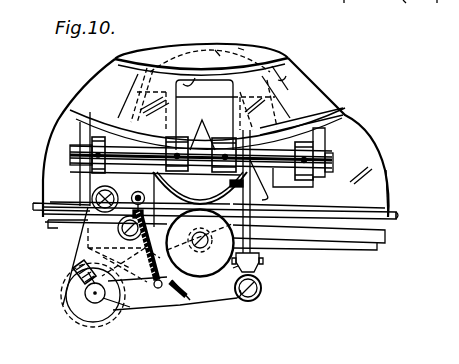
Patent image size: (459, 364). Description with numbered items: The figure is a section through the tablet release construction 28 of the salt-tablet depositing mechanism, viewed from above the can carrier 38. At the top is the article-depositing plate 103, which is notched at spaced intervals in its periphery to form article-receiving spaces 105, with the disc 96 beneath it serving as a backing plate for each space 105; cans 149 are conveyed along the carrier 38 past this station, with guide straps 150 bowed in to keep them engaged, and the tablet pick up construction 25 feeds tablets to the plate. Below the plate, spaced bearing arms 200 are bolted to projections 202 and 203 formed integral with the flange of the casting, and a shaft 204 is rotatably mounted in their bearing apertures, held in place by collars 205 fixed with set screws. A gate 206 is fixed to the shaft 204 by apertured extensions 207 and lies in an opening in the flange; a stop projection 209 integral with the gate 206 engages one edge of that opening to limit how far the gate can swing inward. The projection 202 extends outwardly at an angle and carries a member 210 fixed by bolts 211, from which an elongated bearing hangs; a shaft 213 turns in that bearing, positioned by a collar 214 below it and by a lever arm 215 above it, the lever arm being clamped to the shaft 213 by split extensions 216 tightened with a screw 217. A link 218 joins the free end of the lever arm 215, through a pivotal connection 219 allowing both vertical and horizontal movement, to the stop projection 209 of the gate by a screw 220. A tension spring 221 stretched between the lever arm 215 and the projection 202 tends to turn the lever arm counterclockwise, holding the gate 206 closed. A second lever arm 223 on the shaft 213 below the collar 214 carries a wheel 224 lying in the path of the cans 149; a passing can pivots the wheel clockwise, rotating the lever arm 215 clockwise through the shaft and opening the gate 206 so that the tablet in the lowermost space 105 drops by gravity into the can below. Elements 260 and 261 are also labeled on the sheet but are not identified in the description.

The tablet pick up construction 25 is at (335, 86).
The tablet release construction 28 is at (167, 323).
The can carrier 38 is at (372, 191).
The disc 96 is at (437, 0).
The article-depositing plate 103 is at (240, 48).
The article-receiving space 105 is at (183, 84).
The can 149 is at (217, 53).
The guide strap 150 is at (398, 213).
The bearing arm 200 is at (80, 134).
The projection 202 is at (107, 175).
The projection 203 is at (300, 186).
The shaft 204 is at (288, 147).
The collar 205 is at (97, 137).
The gate 206 is at (201, 170).
The apertured extension 207 is at (200, 130).
The stop projection 209 is at (215, 240).
The member 210 is at (80, 250).
The bolt 211 is at (112, 212).
The shaft 213 is at (95, 304).
The collar 214 is at (73, 320).
The lever arm 215 is at (199, 298).
The split extension 216 is at (80, 297).
The screw 217 is at (77, 285).
The link 218 is at (258, 251).
The pivotal connection 219 is at (262, 281).
The screw 220 is at (257, 183).
The tension spring 221 is at (143, 259).
The second lever arm 223 is at (172, 283).
The wheel 224 is at (213, 275).
The tube 260 is at (344, 0).
The fitting 261 is at (406, 2).